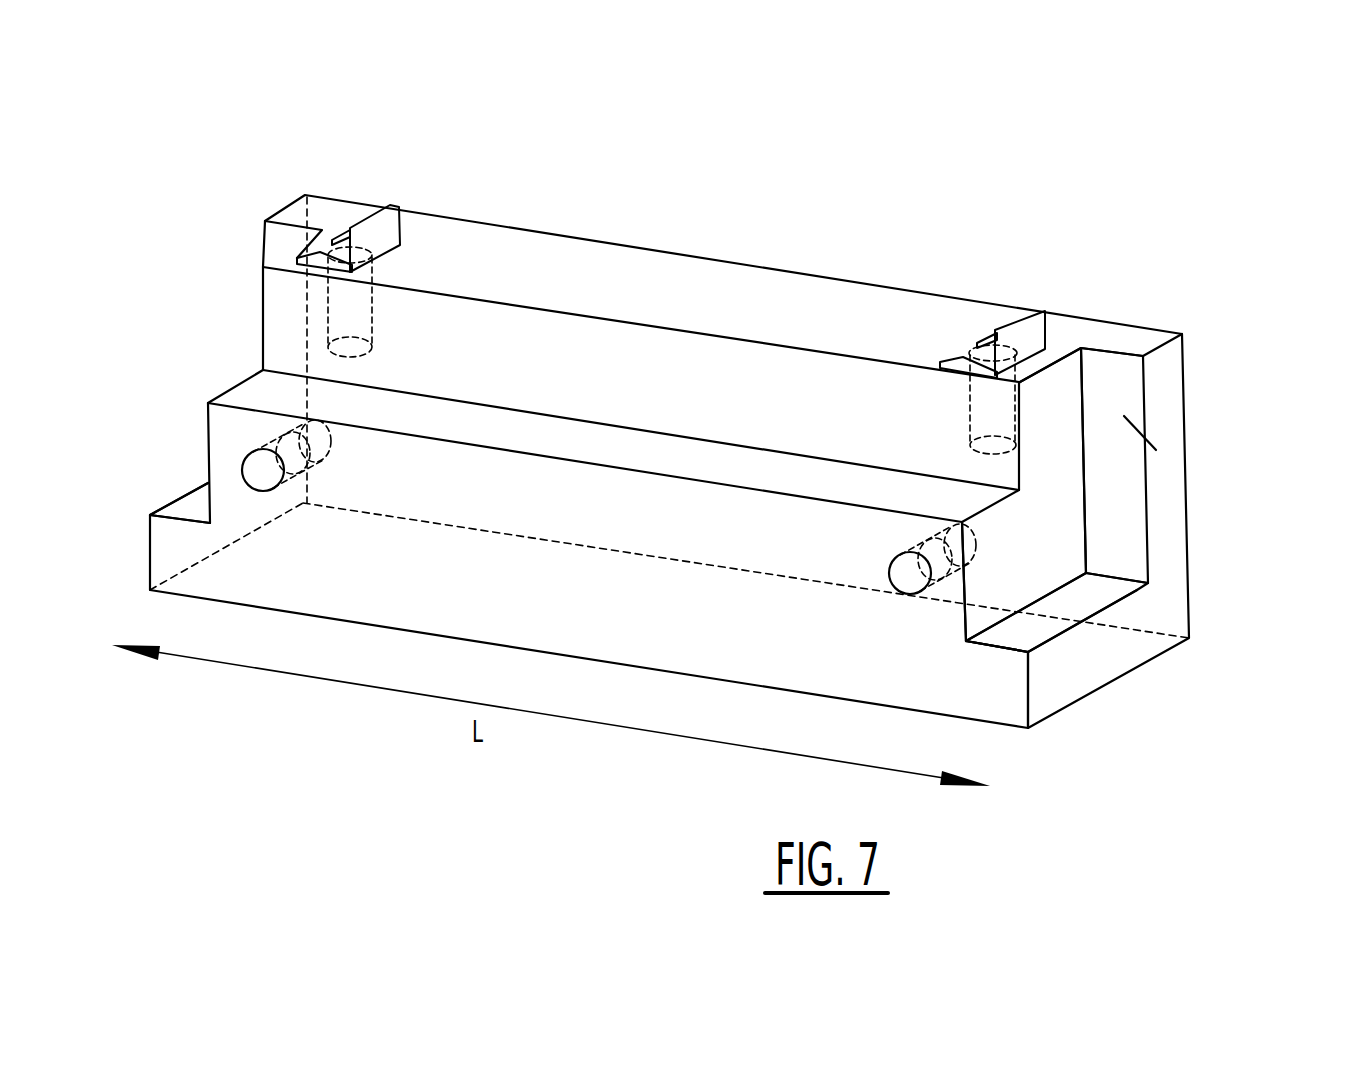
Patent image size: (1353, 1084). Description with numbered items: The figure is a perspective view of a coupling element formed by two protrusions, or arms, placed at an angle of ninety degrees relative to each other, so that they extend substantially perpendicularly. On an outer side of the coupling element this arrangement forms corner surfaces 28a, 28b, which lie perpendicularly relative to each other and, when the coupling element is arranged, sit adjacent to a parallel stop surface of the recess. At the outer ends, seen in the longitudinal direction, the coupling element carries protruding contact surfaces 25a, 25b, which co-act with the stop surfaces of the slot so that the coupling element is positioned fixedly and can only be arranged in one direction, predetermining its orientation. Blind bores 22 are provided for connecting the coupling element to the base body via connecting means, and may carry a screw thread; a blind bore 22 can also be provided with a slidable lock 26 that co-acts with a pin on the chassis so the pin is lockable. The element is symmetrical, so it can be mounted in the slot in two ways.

The blind bore 22 is at (360, 320).
The protruding contact surface 25a is at (190, 505).
The protruding contact surface 25b is at (265, 248).
The slidable lock 26 is at (393, 225).
The corner surface 28a is at (856, 676).
The corner surface 28b is at (1100, 300).